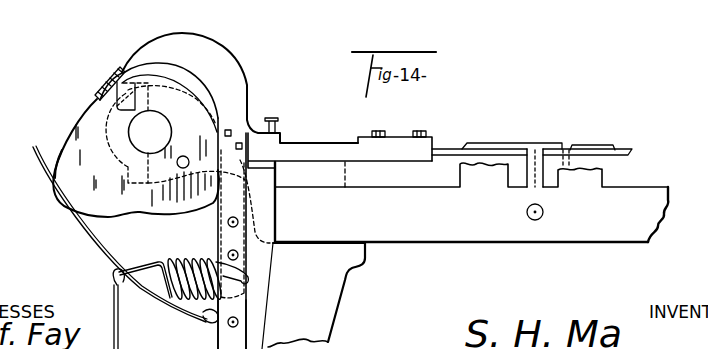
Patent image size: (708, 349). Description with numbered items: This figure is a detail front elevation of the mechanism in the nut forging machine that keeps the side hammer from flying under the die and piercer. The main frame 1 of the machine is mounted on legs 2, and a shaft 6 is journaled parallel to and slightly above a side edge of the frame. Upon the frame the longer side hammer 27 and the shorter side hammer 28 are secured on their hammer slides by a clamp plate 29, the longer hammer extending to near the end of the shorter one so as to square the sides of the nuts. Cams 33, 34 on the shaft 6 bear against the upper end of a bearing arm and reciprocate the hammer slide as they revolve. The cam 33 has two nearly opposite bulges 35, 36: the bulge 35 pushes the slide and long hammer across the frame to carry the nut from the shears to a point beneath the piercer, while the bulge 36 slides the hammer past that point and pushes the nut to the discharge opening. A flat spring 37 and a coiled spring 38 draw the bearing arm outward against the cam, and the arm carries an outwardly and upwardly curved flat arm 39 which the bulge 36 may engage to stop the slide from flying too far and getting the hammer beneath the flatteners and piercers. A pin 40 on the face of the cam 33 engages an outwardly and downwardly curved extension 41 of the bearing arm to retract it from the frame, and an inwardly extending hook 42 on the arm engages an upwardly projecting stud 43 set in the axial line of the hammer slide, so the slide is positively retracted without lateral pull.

The main frame 1 is at (471, 202).
The legs 2 is at (313, 296).
The shaft 6 is at (150, 132).
The longer side hammer 27 is at (488, 142).
The shorter side hammer 28 is at (458, 156).
The clamp plate 29 is at (390, 138).
The cam 33 is at (149, 140).
The cam 34 is at (232, 324).
The bulge 35 is at (227, 160).
The bulge 36 is at (64, 168).
The flat spring 37 is at (116, 301).
The coiled spring 38 is at (198, 265).
The curved flat arm 39 is at (91, 243).
The pin 40 is at (183, 156).
The curved extension 41 is at (240, 88).
The hook 42 is at (282, 141).
The stud 43 is at (278, 121).